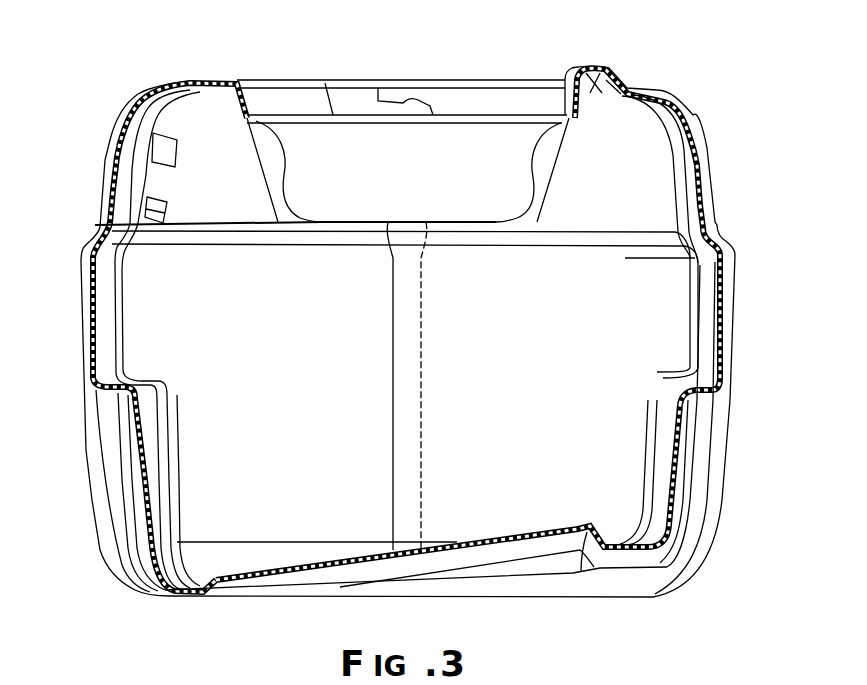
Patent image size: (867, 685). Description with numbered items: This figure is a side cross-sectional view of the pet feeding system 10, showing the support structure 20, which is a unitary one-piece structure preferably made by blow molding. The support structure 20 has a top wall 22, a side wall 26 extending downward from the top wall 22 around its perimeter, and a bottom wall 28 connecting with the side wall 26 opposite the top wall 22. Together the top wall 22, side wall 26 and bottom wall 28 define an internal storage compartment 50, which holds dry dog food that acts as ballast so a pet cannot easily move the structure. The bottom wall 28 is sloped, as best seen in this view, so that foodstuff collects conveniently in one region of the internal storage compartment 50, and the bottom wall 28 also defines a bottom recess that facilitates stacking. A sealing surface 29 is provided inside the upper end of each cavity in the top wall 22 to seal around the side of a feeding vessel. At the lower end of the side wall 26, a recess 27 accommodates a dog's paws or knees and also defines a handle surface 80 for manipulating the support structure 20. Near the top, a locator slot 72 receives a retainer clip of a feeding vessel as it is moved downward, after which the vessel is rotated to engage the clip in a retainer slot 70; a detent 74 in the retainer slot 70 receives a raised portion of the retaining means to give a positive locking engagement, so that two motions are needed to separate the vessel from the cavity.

The pet feeding system 10 is at (95, 81).
The support structure 20 is at (137, 590).
The top wall 22 is at (190, 85).
The side wall 26 is at (725, 298).
The recess 27 is at (140, 421).
The bottom wall 28 is at (372, 562).
The sealing surface 29 is at (268, 189).
The internal storage compartment 50 is at (473, 428).
The retainer slot 70 is at (408, 115).
The locator slot 72 is at (347, 90).
The detent 74 is at (410, 101).
The handle surface 80 is at (110, 384).